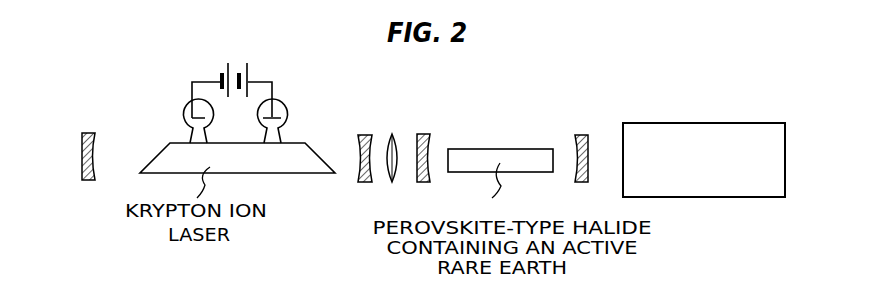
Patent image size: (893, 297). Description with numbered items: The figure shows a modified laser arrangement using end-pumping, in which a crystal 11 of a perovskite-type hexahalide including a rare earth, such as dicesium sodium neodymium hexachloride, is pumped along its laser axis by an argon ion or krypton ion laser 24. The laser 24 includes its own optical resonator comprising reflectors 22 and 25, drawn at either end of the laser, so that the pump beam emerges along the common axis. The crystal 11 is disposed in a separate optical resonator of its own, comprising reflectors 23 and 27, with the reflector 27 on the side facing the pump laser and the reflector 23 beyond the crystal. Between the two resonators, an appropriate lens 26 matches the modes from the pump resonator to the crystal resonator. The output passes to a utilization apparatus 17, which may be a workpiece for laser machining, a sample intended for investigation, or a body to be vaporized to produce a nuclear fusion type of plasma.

The crystal 11 is at (497, 157).
The utilization apparatus 17 is at (694, 123).
The reflector 22 is at (87, 130).
The reflector 23 is at (585, 132).
The krypton ion laser 24 is at (297, 153).
The reflector 25 is at (363, 132).
The lens 26 is at (393, 131).
The reflector 27 is at (425, 132).